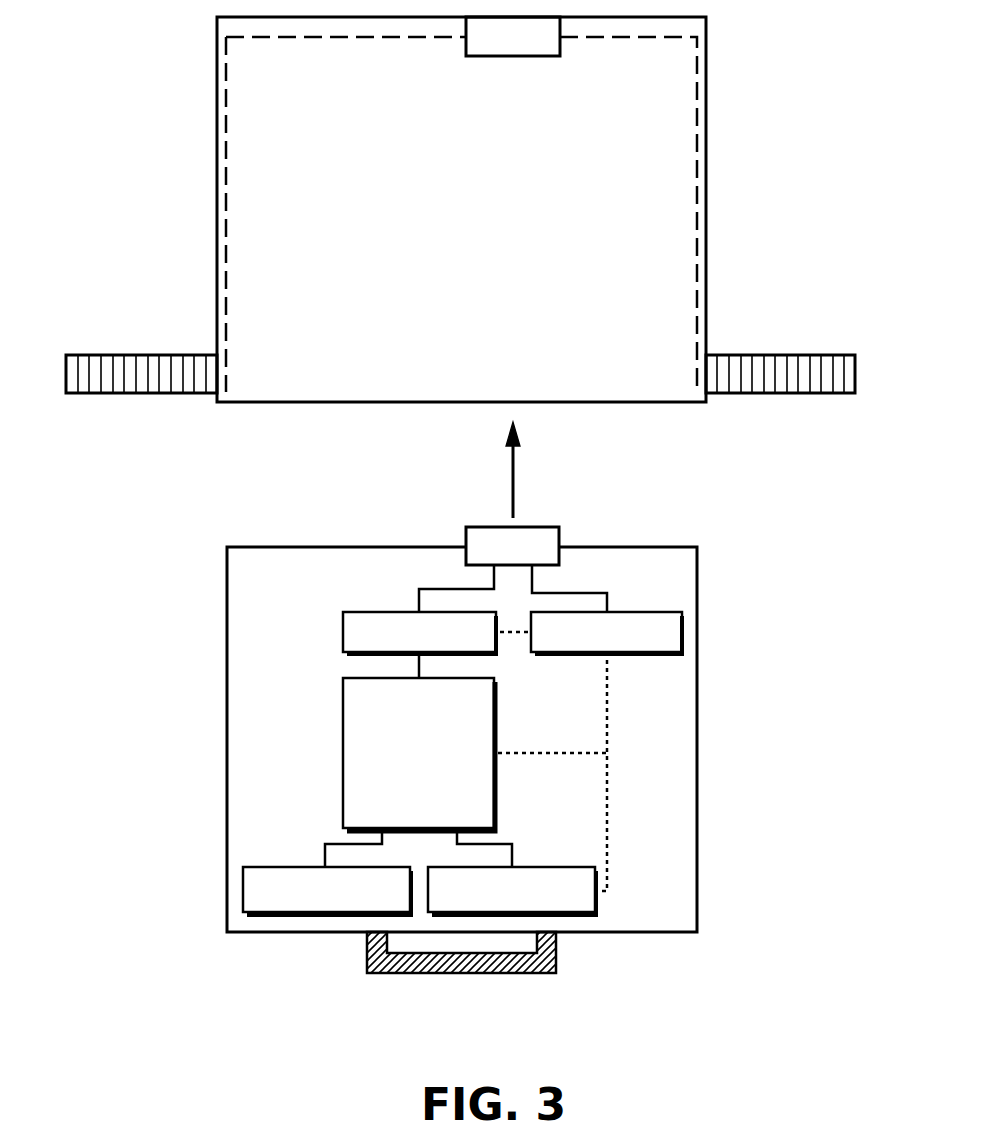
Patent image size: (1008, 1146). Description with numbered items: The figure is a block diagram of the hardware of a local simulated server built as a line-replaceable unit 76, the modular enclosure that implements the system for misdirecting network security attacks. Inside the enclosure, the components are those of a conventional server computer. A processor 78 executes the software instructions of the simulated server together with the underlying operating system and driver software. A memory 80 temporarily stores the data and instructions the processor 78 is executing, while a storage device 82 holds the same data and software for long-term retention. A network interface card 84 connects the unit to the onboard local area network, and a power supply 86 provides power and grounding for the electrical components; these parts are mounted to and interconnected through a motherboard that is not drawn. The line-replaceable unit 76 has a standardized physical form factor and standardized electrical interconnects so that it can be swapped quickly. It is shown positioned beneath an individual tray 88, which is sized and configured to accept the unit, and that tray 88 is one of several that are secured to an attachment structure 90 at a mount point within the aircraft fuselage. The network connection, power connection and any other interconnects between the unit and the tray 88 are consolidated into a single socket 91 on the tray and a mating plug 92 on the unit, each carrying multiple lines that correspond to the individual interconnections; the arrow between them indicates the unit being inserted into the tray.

The line-replaceable unit 76 is at (227, 683).
The processor 78 is at (343, 753).
The memory 80 is at (243, 891).
The storage device 82 is at (580, 916).
The network interface card 84 is at (343, 632).
The power supply 86 is at (656, 612).
The tray 88 is at (706, 204).
The attachment structure 90 is at (771, 353).
The socket 91 is at (510, 56).
The plug 92 is at (477, 527).